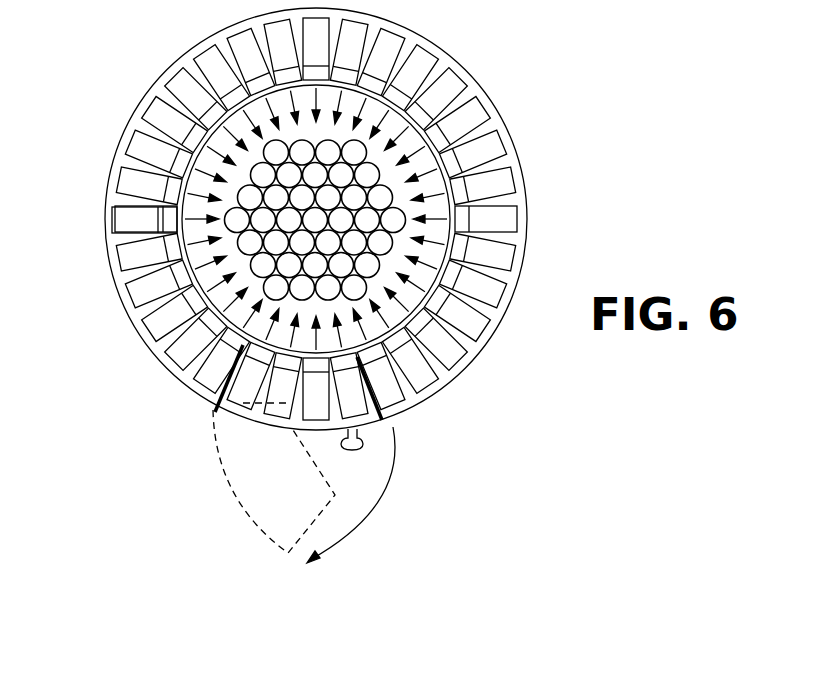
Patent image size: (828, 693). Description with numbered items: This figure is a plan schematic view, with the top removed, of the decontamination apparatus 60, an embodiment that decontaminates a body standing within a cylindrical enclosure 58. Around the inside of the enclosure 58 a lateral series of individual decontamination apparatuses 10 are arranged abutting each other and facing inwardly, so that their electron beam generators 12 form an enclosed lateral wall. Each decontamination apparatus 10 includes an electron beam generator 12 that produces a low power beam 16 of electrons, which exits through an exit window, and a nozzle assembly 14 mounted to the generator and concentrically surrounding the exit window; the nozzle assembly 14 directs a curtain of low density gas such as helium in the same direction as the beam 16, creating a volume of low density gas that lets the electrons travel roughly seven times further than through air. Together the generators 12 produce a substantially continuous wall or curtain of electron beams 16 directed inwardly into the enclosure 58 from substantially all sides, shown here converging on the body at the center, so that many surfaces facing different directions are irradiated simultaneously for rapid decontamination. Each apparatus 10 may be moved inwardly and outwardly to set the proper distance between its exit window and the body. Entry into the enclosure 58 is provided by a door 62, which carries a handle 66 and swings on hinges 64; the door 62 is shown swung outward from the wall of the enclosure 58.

The decontamination apparatus 10 is at (262, 88).
The electron beam generator 12 is at (115, 185).
The nozzle assembly 14 is at (168, 197).
The beam of electrons 16 is at (200, 285).
The enclosure 58 is at (485, 347).
The decontamination apparatus 60 is at (572, 97).
The door 62 is at (262, 425).
The hinges 64 is at (210, 406).
The handle 66 is at (363, 448).